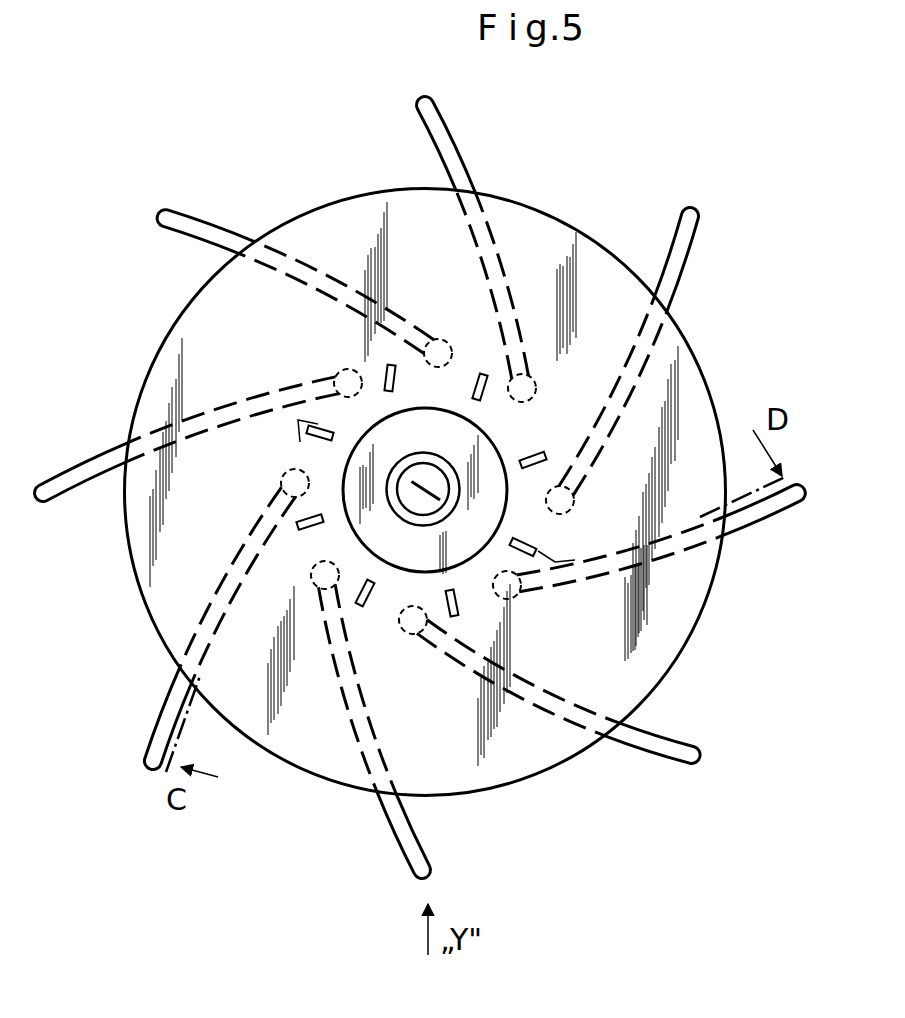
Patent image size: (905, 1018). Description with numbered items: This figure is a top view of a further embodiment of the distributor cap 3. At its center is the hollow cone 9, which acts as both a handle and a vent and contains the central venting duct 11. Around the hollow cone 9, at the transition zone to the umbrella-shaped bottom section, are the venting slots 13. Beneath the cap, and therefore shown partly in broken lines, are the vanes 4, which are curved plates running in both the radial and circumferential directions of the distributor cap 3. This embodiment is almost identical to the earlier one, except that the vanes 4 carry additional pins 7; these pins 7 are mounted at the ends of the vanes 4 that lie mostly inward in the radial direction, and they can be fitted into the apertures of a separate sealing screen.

The distributor cap 3 is at (291, 808).
The vanes 4 is at (420, 110).
The pins 7 is at (336, 377).
The hollow cone 9 is at (487, 470).
The central venting duct 11 is at (435, 478).
The venting slot 13 is at (547, 455).